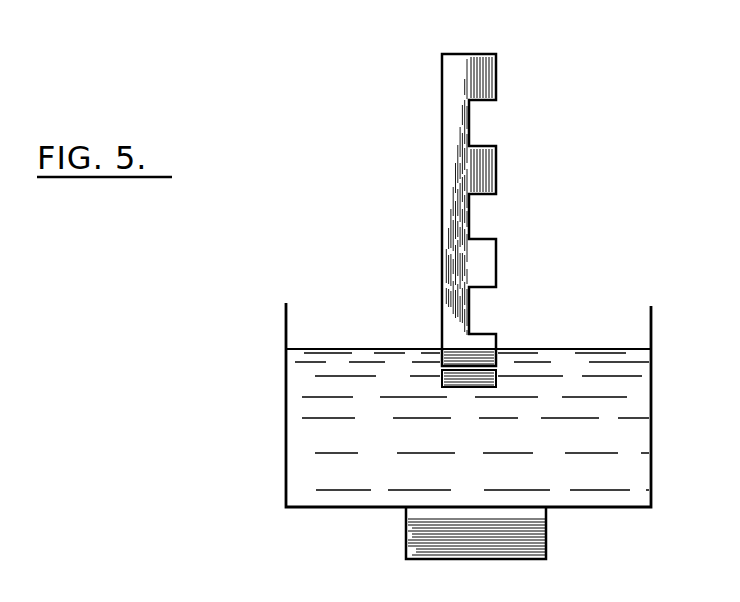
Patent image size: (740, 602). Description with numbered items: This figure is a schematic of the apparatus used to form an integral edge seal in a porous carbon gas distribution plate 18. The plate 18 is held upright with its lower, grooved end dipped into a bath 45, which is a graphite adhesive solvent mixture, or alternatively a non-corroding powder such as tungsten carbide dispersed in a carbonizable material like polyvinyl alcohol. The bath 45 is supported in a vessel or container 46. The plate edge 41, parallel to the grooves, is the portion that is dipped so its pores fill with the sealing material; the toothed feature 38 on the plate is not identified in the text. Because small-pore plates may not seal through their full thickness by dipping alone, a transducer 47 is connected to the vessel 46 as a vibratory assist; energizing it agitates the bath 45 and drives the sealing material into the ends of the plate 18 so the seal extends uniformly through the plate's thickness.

The gas distribution plate 18 is at (480, 254).
The plate edge 41 is at (478, 55).
The tooth 38 is at (478, 126).
The bath 45 is at (577, 349).
The vessel 46 is at (286, 409).
The transducer 47 is at (406, 536).